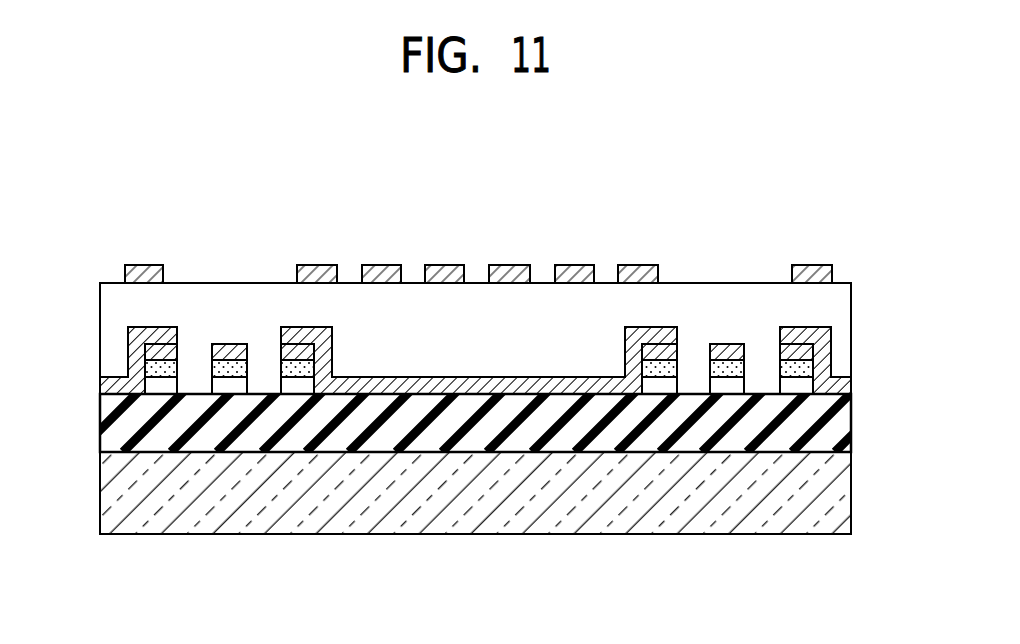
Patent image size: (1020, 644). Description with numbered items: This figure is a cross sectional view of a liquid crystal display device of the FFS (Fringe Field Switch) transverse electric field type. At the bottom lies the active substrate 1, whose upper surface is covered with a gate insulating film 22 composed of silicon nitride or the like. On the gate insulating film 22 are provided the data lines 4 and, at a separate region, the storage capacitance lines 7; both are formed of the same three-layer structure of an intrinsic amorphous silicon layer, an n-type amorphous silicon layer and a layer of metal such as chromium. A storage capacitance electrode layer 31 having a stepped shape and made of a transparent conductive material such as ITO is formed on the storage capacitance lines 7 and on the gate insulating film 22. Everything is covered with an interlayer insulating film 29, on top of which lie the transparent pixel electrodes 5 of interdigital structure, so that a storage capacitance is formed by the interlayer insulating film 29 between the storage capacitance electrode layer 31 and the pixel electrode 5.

The active substrate 1 is at (842, 479).
The data line 4 is at (230, 396).
The pixel electrode 5 is at (145, 266).
The storage capacitance line 7 is at (161, 396).
The gate insulating film 22 is at (842, 426).
The interlayer insulating film 29 is at (842, 303).
The storage capacitance electrode layer 31 is at (135, 350).